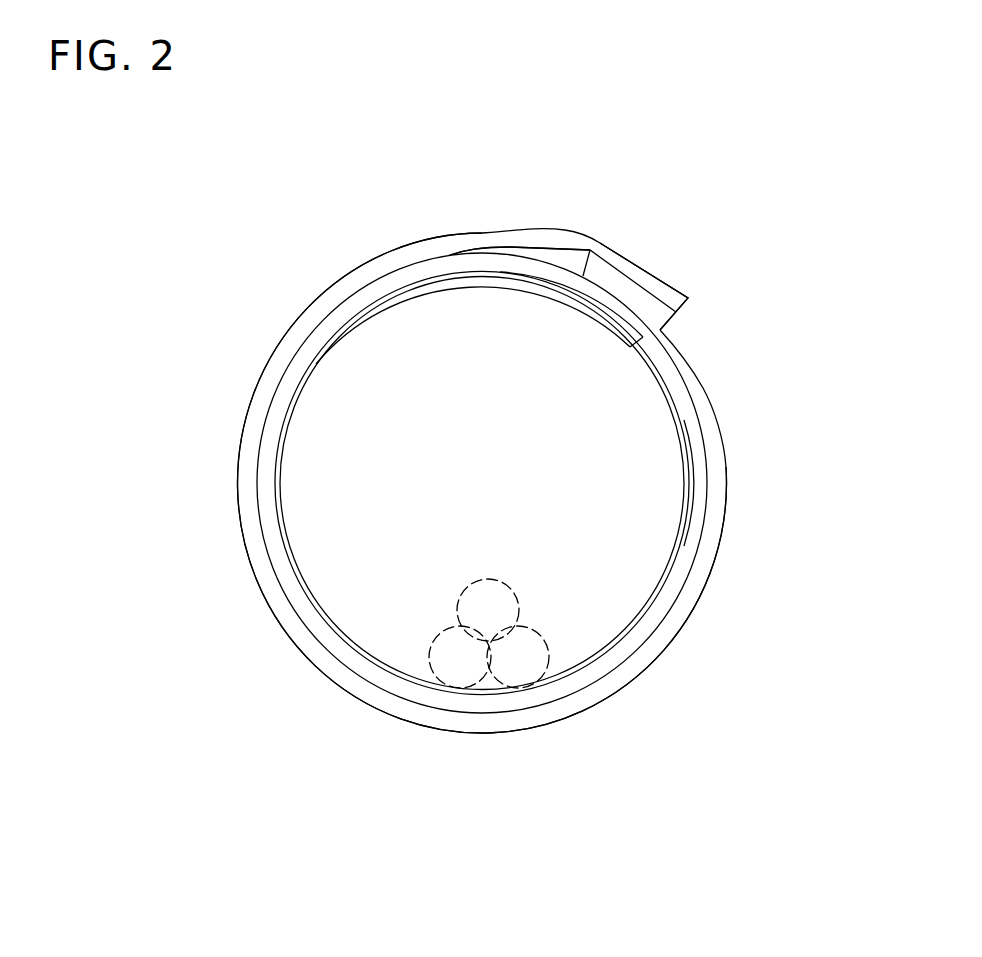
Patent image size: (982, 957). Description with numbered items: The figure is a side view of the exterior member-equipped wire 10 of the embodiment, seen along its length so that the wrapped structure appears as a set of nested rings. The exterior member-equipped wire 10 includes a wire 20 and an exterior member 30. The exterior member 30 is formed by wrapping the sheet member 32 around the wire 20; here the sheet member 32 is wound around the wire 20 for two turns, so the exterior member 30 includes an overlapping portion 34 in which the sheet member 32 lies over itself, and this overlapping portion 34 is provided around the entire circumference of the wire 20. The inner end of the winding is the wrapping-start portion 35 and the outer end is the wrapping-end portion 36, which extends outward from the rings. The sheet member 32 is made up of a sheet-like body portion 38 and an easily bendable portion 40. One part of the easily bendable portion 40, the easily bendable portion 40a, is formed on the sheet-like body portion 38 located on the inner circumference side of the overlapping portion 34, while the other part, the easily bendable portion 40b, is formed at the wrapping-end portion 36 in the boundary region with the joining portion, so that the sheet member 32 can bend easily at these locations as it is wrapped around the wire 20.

The exterior member-equipped wire 10 is at (486, 184).
The wire 20 is at (462, 678).
The exterior member 30 is at (421, 241).
The sheet member 32 is at (340, 233).
The overlapping portion 34 is at (624, 659).
The wrapping-start portion 35 is at (675, 390).
The wrapping-end portion 36 is at (627, 256).
The sheet-like body portion 38 is at (340, 294).
The easily bendable portion 40 is at (335, 325).
The easily bendable portion 40a is at (699, 490).
The easily bendable portion 40b is at (584, 250).